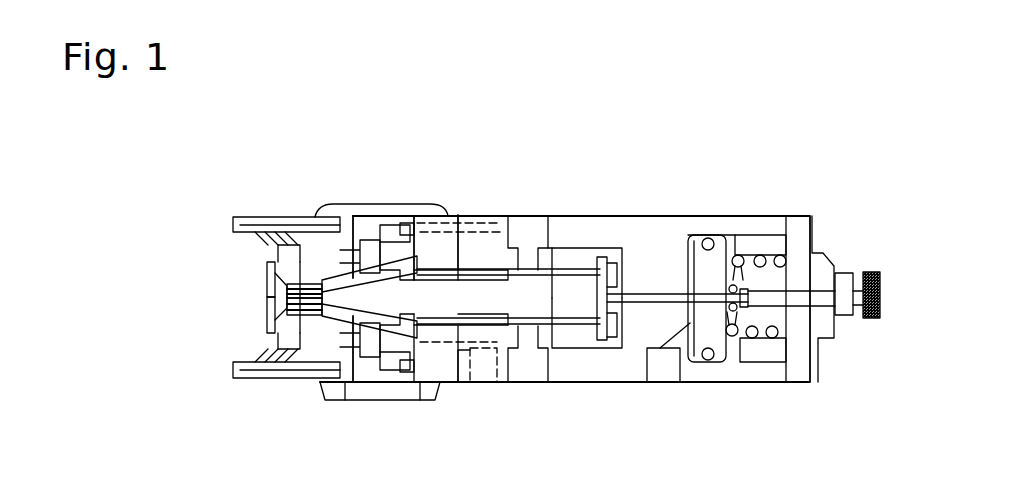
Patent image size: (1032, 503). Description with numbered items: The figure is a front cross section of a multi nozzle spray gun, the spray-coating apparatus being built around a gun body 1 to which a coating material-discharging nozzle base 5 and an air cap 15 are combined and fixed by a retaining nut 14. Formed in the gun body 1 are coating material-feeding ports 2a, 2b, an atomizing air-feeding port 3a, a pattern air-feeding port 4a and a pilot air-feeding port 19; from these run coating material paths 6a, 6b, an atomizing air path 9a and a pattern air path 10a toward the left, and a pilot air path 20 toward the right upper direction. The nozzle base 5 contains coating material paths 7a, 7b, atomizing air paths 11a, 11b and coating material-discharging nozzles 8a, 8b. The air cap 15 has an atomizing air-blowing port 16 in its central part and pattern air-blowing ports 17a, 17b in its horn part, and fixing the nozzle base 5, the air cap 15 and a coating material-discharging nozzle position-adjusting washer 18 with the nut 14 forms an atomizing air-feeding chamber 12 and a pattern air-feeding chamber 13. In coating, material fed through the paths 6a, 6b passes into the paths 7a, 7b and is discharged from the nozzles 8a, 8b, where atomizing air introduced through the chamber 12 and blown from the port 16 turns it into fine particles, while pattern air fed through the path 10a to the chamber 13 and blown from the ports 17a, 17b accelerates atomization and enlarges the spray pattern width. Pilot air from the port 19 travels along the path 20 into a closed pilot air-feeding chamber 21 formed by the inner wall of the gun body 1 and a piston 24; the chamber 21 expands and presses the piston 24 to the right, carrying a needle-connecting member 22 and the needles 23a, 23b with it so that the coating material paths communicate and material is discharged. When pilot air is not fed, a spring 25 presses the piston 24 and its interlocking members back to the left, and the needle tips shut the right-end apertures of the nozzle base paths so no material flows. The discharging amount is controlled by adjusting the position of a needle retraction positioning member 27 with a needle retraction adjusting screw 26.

The gun body 1 is at (737, 211).
The coating material-feeding port 2a is at (533, 383).
The coating material-feeding port 2b is at (530, 211).
The atomizing air-feeding port 3a is at (483, 383).
The pattern air-feeding port 4a is at (483, 210).
The coating material-discharging nozzle base 5 is at (413, 218).
The coating material path 6a is at (415, 355).
The coating material path 6b is at (395, 360).
The coating material path 7a is at (350, 325).
The coating material path 7b is at (358, 277).
The coating material-discharging nozzle 8a is at (290, 325).
The coating material-discharging nozzle 8b is at (277, 283).
The atomizing air path 9a is at (457, 360).
The pattern air path 10a is at (425, 222).
The atomizing air path 11a is at (405, 318).
The atomizing air path 11b is at (362, 262).
The atomizing air-feeding chamber 12 is at (333, 307).
The pattern air-feeding chamber 13 is at (398, 212).
The retaining nut 14 is at (357, 206).
The air cap 15 is at (231, 218).
The atomizing air-blowing port 16 is at (262, 307).
The pattern air-blowing port 17a is at (268, 245).
The pattern air-blowing port 17b is at (270, 353).
The bottom mount 18 is at (393, 397).
The pilot air-feeding port 19 is at (660, 381).
The pilot air path 20 is at (697, 367).
The pilot air-feeding chamber 21 is at (727, 360).
The needle-connecting member 22 is at (625, 275).
The needle 23a is at (553, 328).
The needle 23b is at (552, 272).
The piston 24 is at (712, 260).
The spring 25 is at (793, 381).
The needle retraction adjusting screw 26 is at (870, 317).
The needle retraction positioning member 27 is at (780, 283).